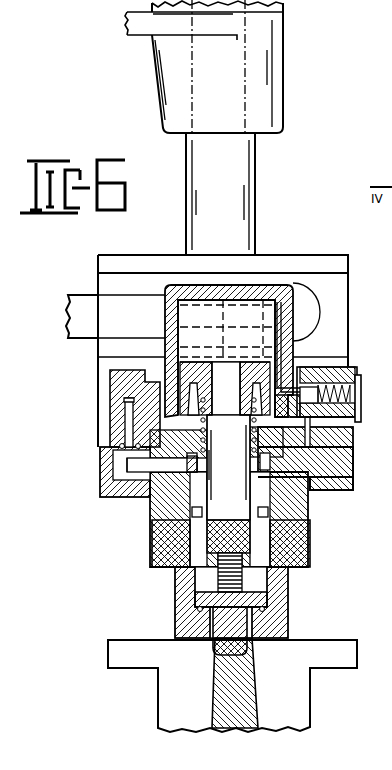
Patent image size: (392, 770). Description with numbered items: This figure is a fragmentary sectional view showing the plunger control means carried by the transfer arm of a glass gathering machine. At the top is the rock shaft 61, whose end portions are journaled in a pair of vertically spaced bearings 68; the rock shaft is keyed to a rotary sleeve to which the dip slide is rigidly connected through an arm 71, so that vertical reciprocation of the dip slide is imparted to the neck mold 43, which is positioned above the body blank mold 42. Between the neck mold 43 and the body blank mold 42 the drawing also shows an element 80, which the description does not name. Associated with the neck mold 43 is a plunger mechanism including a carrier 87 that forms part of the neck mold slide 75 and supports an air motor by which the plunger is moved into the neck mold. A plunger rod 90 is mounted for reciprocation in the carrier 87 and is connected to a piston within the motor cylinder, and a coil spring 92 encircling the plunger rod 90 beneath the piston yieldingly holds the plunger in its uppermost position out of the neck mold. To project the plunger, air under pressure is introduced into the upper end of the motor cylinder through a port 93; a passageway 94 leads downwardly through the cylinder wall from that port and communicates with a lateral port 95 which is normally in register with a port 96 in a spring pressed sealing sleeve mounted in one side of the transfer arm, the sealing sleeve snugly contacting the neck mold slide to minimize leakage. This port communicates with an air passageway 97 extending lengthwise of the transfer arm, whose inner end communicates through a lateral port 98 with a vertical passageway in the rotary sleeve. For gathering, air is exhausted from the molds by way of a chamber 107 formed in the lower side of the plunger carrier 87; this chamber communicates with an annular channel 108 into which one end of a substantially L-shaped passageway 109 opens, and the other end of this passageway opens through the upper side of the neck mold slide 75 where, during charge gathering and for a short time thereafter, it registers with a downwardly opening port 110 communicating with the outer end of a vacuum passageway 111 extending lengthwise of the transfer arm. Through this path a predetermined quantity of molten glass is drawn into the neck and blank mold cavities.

The body blank mold 42 is at (167, 704).
The neck mold 43 is at (182, 600).
The rock shaft 61 is at (246, 165).
The bearings 68 is at (165, 65).
The arm 71 is at (82, 303).
The neck mold slide 75 is at (355, 459).
The plug 80 is at (237, 623).
The carrier 87 is at (304, 517).
The plunger rod 90 is at (228, 477).
The coil spring 92 is at (350, 431).
The port 93 is at (280, 300).
The passageway 94 is at (285, 352).
The lateral port 95 is at (295, 376).
The port 96 is at (343, 372).
The air passageway 97 is at (361, 384).
The lateral port 98 is at (358, 417).
The chamber 107 is at (197, 535).
The annular channel 108 is at (193, 462).
The L-shaped passageway 109 is at (135, 465).
The downwardly opening port 110 is at (127, 427).
The vacuum passageway 111 is at (128, 402).